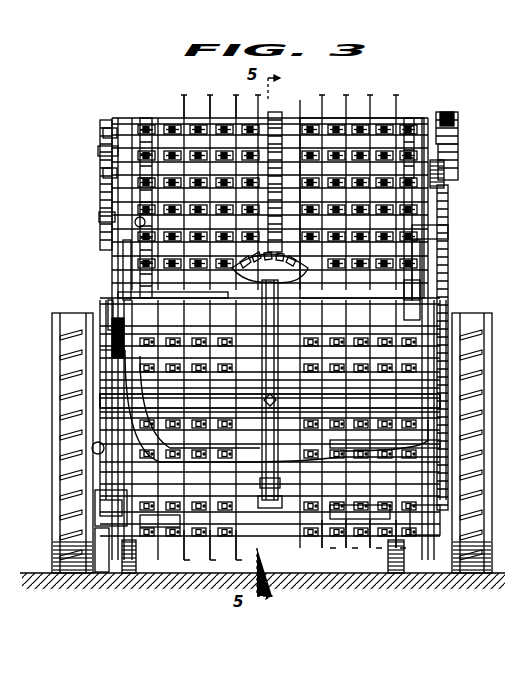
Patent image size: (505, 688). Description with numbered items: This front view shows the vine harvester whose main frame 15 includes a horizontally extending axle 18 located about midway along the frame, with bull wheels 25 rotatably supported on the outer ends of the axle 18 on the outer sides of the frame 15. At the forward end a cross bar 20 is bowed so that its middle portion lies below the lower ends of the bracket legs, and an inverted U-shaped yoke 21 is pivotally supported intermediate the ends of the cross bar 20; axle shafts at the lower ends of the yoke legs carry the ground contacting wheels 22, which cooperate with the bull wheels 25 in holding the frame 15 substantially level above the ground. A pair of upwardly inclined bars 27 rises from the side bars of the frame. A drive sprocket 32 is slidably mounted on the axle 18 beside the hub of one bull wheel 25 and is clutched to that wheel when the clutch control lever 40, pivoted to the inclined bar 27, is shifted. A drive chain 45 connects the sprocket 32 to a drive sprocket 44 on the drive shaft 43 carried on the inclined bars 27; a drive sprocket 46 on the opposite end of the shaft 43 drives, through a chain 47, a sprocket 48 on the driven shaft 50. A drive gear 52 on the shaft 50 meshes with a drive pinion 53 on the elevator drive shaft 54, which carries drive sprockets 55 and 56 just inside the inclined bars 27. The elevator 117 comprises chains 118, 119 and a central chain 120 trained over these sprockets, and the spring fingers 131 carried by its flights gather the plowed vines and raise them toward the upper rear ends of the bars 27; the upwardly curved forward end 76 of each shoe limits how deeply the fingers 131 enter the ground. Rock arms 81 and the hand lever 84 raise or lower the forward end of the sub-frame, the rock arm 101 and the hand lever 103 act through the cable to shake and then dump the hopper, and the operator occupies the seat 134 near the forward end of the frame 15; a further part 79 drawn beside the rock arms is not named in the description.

The main frame 15 is at (380, 404).
The axle 18 is at (80, 470).
The cross bar 20 is at (350, 548).
The inverted U-shaped yoke 21 is at (182, 530).
The ground contacting wheels 22 is at (128, 545).
The bull wheels 25 is at (70, 432).
The upwardly inclined bars 27 is at (124, 265).
The drive sprocket 32 is at (440, 442).
The clutch control lever 40 is at (412, 256).
The drive shaft 43 is at (138, 220).
The drive sprocket 44 is at (430, 236).
The drive chain 45 is at (450, 316).
The drive sprocket 46 is at (99, 214).
The chain 47 is at (103, 174).
The sprocket 48 is at (103, 130).
The driven shaft 50 is at (98, 150).
The drive gear 52 is at (450, 149).
The drive pinion 53 is at (456, 119).
The elevator drive shaft 54 is at (446, 114).
The drive sprocket 55 is at (409, 128).
The drive sprocket 56 is at (146, 120).
The upwardly curved forward end of shoe 76 is at (108, 530).
The conduit 79 is at (122, 356).
The rock arms 81 is at (138, 360).
The hand lever 84 is at (168, 312).
The rock arm 101 is at (110, 328).
The hand lever 103 is at (420, 268).
The elevator 117 is at (352, 150).
The chain 118 is at (446, 175).
The chain 119 is at (112, 126).
The central chain 120 is at (283, 115).
The spring fingers 131 is at (214, 120).
The operator's seat 134 is at (226, 276).